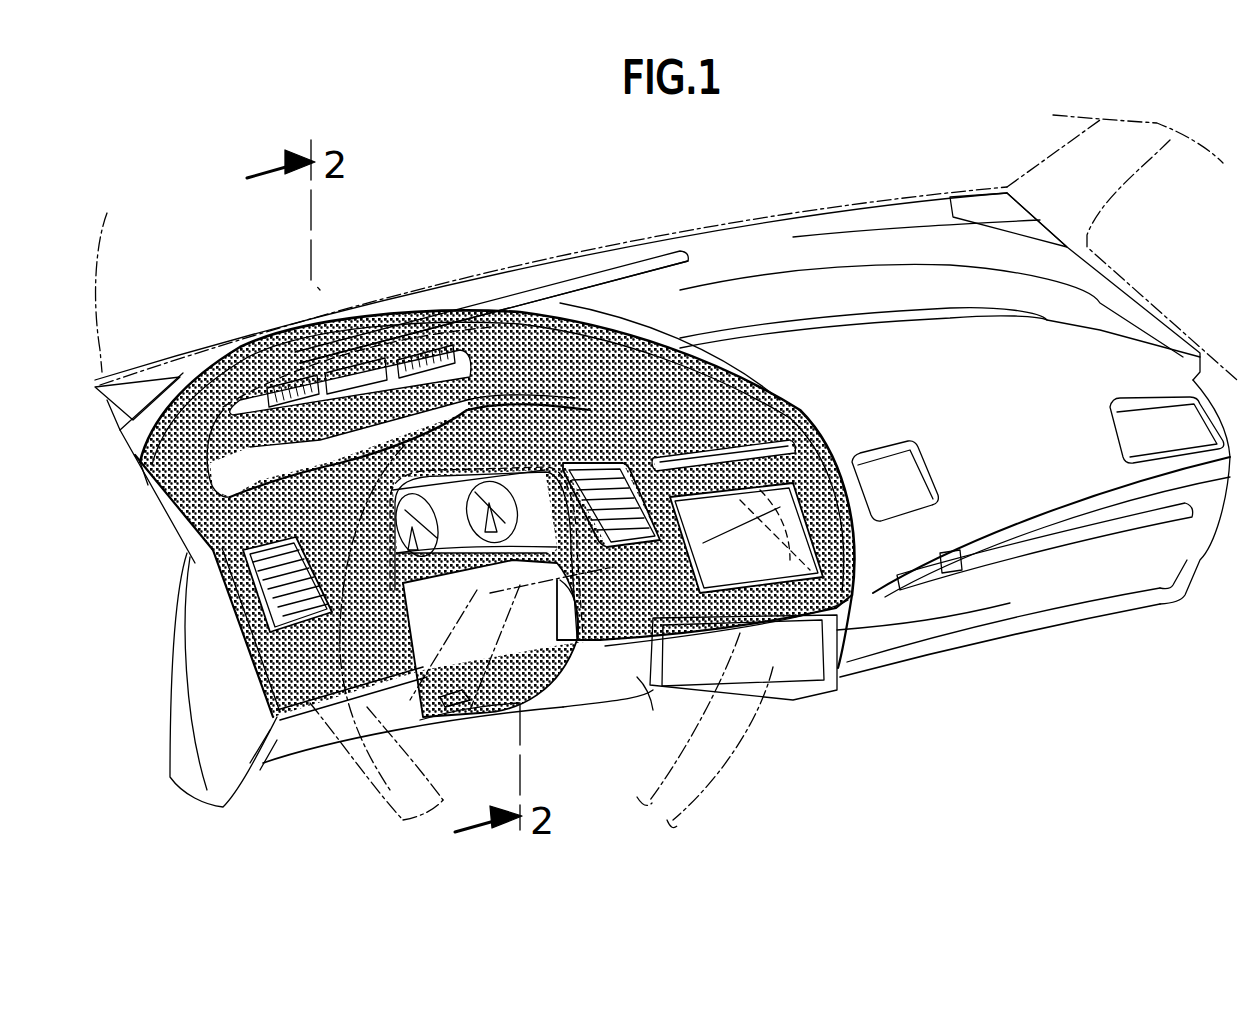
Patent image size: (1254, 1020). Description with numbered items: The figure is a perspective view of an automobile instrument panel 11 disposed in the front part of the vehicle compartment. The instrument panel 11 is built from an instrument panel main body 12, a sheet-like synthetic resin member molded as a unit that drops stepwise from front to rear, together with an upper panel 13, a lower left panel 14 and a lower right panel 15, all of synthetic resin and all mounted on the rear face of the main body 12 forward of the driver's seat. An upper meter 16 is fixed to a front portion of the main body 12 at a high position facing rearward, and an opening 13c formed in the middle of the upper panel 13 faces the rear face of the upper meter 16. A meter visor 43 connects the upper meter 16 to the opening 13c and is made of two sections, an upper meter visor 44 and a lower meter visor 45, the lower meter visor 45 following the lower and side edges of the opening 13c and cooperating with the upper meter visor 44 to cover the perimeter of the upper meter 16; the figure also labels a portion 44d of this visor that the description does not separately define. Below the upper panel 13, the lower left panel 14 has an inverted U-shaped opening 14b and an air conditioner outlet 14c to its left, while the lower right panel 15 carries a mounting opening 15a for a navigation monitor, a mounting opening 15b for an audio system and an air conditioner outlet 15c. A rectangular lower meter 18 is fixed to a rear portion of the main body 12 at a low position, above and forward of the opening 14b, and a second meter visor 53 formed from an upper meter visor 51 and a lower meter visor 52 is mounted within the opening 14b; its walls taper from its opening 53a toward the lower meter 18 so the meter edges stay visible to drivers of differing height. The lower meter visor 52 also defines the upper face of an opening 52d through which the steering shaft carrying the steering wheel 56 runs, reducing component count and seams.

The instrument panel 11 is at (878, 183).
The instrument panel main body 12 is at (730, 265).
The upper panel 13 is at (263, 332).
The opening 13c is at (178, 508).
The lower left panel 14 is at (304, 722).
The inverted U-shaped opening 14b is at (566, 640).
The air conditioner outlet 14c is at (267, 607).
The lower right panel 15 is at (833, 452).
The mounting opening for a monitor of a navigation system 15a is at (848, 488).
The mounting opening for an audio system 15b is at (802, 430).
The air conditioner outlet 15c is at (688, 541).
The upper meter 16 is at (492, 727).
The lower meter 18 is at (447, 547).
The meter visor 43 is at (602, 188).
The upper meter visor 44 is at (497, 290).
The lower meter visor 45 is at (568, 355).
The visor portion 44d is at (598, 384).
The upper meter visor 51 is at (452, 712).
The lower meter visor 52 is at (478, 700).
The opening 52d is at (530, 563).
The meter visor 53 is at (517, 752).
The opening 53a is at (520, 705).
The steering wheel 56 is at (732, 758).